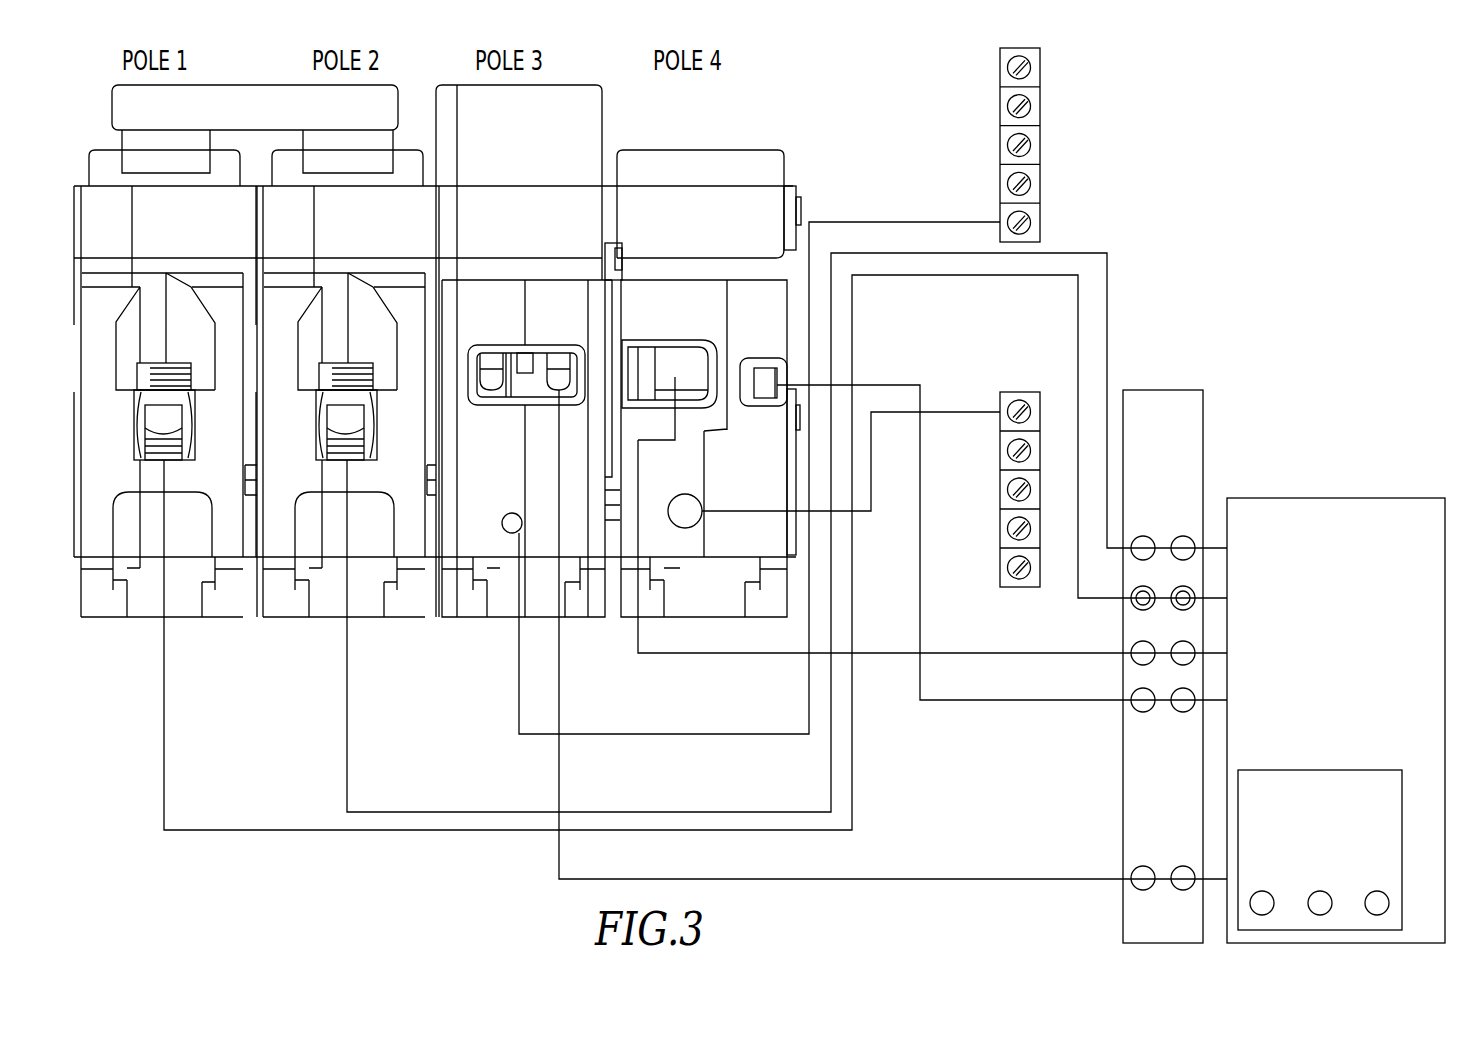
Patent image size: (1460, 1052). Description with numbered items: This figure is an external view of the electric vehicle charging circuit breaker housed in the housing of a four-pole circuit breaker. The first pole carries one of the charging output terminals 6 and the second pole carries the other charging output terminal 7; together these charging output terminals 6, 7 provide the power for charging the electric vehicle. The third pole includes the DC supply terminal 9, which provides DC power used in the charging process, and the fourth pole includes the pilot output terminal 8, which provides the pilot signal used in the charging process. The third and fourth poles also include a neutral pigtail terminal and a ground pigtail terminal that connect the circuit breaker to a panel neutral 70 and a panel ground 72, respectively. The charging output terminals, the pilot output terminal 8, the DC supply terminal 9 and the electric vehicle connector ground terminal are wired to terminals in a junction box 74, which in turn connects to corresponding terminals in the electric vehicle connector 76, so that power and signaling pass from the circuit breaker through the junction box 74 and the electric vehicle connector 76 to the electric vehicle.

The charging output terminal 6 is at (138, 443).
The charging output terminal 7 is at (317, 448).
The pilot output terminal 8 is at (765, 368).
The DC supply terminal 9 is at (553, 390).
The panel neutral 70 is at (1042, 135).
The panel ground 72 is at (1023, 392).
The junction box 74 is at (1165, 390).
The electric vehicle connector 76 is at (1310, 498).